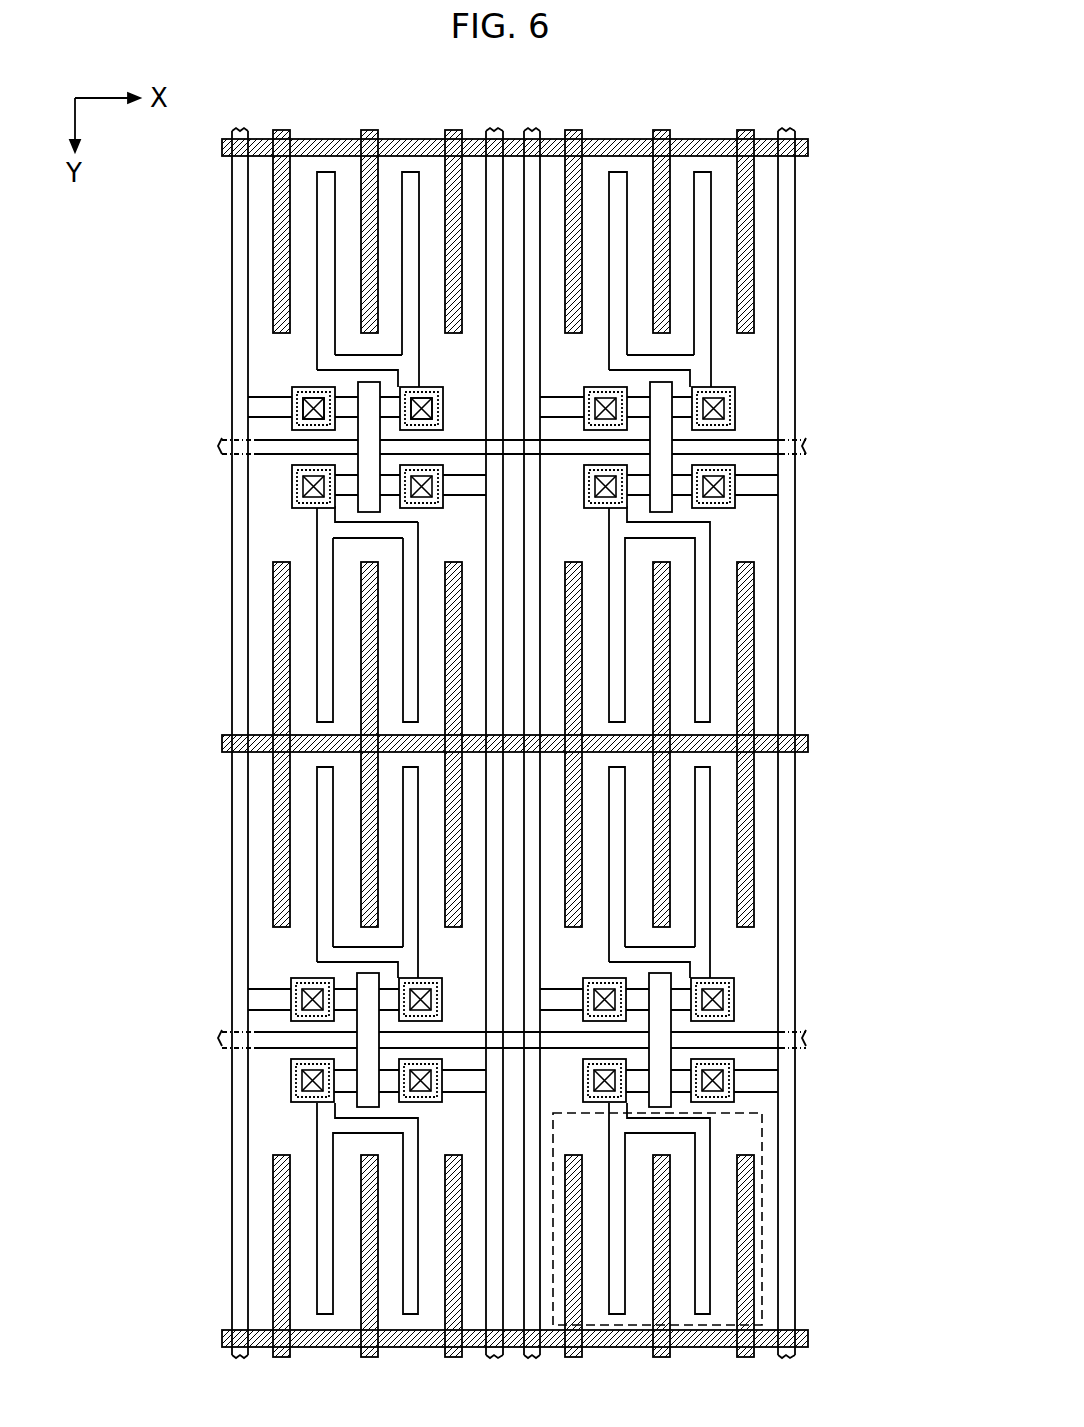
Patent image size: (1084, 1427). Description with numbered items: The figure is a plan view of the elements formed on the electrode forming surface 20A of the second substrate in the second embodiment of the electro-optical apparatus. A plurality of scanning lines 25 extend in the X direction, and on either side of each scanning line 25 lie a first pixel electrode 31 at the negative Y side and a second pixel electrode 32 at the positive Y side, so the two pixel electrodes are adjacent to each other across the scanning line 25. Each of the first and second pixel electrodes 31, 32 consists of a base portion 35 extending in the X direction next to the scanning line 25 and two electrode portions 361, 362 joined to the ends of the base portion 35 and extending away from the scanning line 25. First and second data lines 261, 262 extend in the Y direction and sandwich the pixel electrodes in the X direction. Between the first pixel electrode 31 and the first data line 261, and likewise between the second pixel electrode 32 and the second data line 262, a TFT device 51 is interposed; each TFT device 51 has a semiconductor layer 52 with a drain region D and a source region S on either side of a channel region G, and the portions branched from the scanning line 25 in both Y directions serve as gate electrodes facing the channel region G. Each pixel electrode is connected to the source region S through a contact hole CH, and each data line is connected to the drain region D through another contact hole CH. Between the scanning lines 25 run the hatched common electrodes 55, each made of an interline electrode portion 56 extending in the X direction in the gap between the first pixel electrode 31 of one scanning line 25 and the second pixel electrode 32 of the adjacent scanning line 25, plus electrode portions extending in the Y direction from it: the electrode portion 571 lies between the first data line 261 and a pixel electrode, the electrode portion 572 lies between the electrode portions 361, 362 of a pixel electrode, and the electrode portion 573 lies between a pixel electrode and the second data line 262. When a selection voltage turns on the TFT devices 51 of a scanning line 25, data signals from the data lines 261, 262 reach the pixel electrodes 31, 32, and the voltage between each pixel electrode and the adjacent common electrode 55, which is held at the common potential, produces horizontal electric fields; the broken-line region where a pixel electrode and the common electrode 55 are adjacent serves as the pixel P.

The electrode forming surface 20A is at (871, 1355).
The scanning line 25 is at (803, 448).
The first data line 261 is at (240, 130).
The second data line 262 is at (503, 132).
The first pixel electrode 31 is at (499, 537).
The second pixel electrode 32 is at (312, 599).
The base portion 35 is at (330, 355).
The electrode portion 361 is at (410, 173).
The electrode portion 362 is at (325, 243).
The TFT device 51 is at (329, 438).
The semiconductor layer 52 is at (350, 395).
The common electrode 55 is at (519, 730).
The interline electrode portion 56 is at (338, 147).
The electrode portion 571 is at (301, 165).
The electrode portion 572 is at (383, 174).
The electrode portion 573 is at (471, 177).
The contact hole CH is at (292, 400).
The pixel P is at (765, 1143).
The drain region D is at (357, 453).
The source region S is at (367, 449).
The channel region G is at (369, 447).